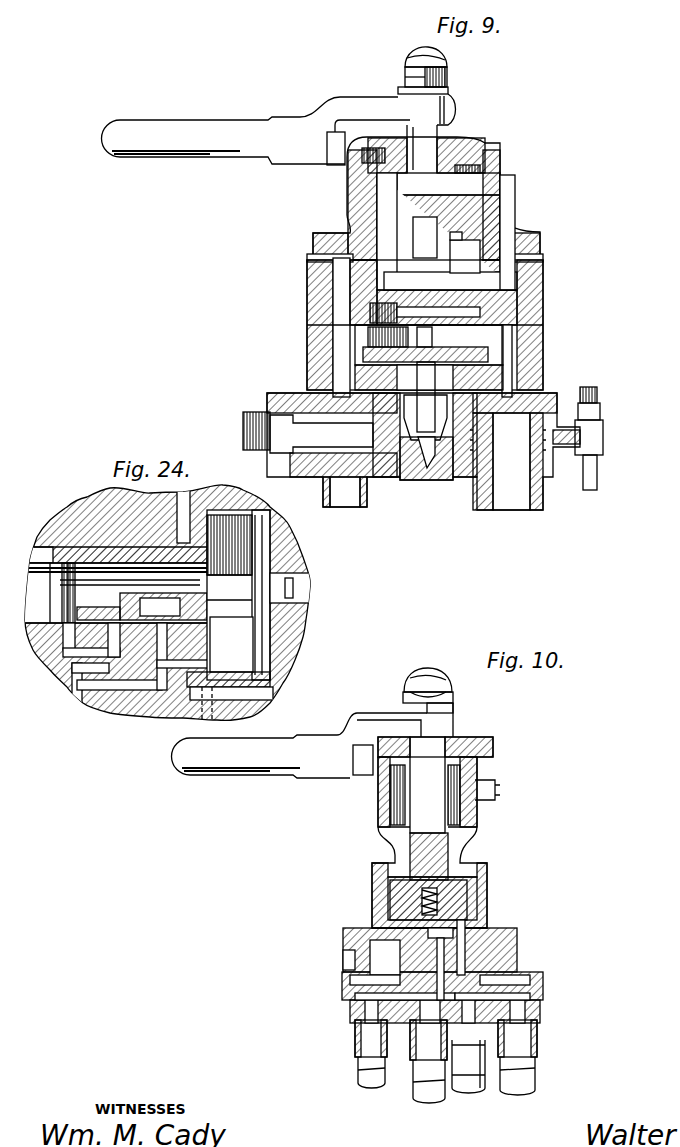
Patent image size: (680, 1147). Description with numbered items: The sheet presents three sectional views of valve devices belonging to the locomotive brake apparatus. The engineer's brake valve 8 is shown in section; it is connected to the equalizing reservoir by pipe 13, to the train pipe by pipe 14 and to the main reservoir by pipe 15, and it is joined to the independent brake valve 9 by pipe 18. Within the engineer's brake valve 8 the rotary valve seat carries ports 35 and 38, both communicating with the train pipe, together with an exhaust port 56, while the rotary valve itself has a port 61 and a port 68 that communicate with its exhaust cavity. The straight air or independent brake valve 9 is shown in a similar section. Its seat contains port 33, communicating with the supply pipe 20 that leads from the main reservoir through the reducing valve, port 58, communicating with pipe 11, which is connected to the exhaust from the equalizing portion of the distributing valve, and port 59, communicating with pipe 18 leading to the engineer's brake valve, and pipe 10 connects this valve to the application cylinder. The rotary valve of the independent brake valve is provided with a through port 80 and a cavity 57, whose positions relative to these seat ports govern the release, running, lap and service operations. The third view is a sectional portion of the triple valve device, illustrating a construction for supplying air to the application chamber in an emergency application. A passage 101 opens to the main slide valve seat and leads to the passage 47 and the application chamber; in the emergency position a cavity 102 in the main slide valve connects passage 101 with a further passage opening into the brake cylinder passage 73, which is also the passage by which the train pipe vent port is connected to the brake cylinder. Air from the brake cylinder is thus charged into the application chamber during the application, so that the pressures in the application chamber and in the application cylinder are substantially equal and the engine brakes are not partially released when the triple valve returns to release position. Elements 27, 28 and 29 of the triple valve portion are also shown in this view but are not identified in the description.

In FIG. 9, the engineer's brake valve 8 is at (520, 238).
In FIG. 9, the pipe 13 is at (597, 472).
In FIG. 9, the pipe 14 is at (515, 497).
In FIG. 9, the pipe 15 is at (345, 500).
In FIG. 9, the port 35 is at (380, 253).
In FIG. 9, the port 38 is at (463, 247).
In FIG. 9, the exhaust port 56 is at (428, 253).
In FIG. 9, the port 61 is at (430, 228).
In FIG. 24, the valve element 27 is at (100, 612).
In FIG. 24, the valve sleeve 28 is at (128, 600).
In FIG. 24, the chamber 29 is at (253, 648).
In FIG. 24, the passage 47 is at (74, 713).
In FIG. 24, the port 68 is at (175, 657).
In FIG. 24, the brake cylinder passage 73 is at (253, 695).
In FIG. 24, the passage 101 is at (140, 703).
In FIG. 24, the cavity 102 is at (160, 618).
In FIG. 10, the independent brake valve 9 is at (453, 857).
In FIG. 10, the pipe 10 is at (470, 1077).
In FIG. 10, the pipe 11 is at (420, 1088).
In FIG. 10, the pipe 18 is at (365, 1070).
In FIG. 10, the supply pipe 20 is at (530, 1070).
In FIG. 10, the port 33 is at (457, 960).
In FIG. 10, the cavity 57 is at (407, 940).
In FIG. 10, the port 58 is at (395, 977).
In FIG. 10, the port 59 is at (398, 960).
In FIG. 10, the through port 80 is at (458, 940).